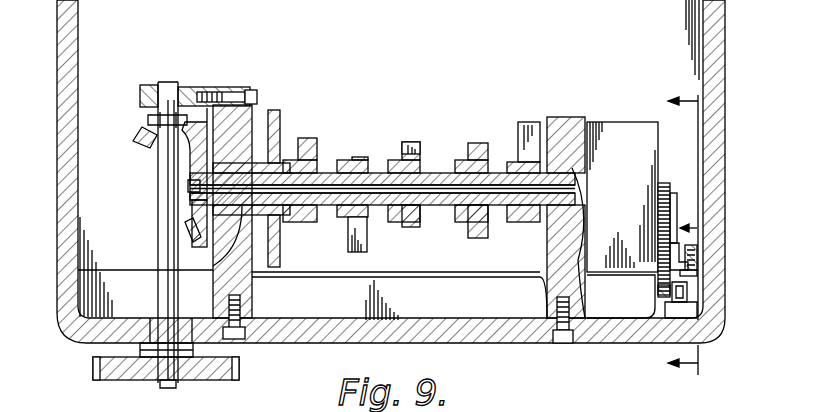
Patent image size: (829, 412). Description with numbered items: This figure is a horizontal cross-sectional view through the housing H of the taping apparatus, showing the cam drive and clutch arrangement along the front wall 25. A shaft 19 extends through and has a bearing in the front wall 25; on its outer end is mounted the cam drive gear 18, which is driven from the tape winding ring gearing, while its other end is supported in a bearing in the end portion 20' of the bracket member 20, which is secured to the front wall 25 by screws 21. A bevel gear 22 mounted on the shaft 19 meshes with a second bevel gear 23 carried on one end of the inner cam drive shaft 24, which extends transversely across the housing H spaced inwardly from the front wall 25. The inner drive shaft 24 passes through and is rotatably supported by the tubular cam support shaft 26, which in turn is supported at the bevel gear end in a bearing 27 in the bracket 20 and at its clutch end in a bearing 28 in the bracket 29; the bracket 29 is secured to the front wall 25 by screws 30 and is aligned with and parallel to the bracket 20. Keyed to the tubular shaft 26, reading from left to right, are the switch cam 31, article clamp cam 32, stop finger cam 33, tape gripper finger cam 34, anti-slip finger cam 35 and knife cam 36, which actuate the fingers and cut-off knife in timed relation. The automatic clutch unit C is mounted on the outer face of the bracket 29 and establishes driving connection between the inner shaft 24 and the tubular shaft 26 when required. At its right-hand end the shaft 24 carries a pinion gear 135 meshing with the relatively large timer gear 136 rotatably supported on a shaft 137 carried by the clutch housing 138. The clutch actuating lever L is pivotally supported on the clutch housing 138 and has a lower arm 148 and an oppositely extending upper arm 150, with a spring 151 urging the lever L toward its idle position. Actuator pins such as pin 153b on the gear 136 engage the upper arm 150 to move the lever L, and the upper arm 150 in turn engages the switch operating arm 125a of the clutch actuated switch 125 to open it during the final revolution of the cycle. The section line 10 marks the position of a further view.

The housing H is at (72, 344).
The section line 10 is at (665, 233).
The cam drive gear 18 is at (105, 372).
The shaft 19 is at (160, 242).
The bracket member 20 is at (236, 211).
The end portion of bracket member 20' is at (186, 95).
The screws 21 is at (250, 338).
The bevel gear 22 is at (137, 148).
The second bevel gear 23 is at (187, 231).
The inner cam drive shaft 24 is at (322, 190).
The front wall portion 25 is at (305, 340).
The tubular cam support shaft 26 is at (430, 173).
The bearing 27 is at (216, 257).
The bearing 28 is at (584, 228).
The bracket 29 is at (556, 118).
The screws 30 is at (569, 343).
The switch cam 31 is at (270, 112).
The article clamp cam 32 is at (310, 140).
The stop finger cam 33 is at (356, 157).
The tape gripper finger cam 34 is at (412, 142).
The anti-slip finger cam 35 is at (470, 144).
The knife cam 36 is at (530, 123).
The clutch actuated switch 125 is at (690, 310).
The switch operating arm 125a is at (688, 292).
The pinion gear 135 is at (664, 183).
The timer gear 136 is at (670, 222).
The shaft 137 is at (640, 262).
The clutch housing 138 is at (653, 138).
The lower arm 148 is at (677, 198).
The upper arm 150 is at (697, 273).
The spring 151 is at (700, 249).
The actuator pin 153b is at (658, 296).
The automatic clutch unit C is at (622, 118).
The clutch actuating lever L is at (710, 229).